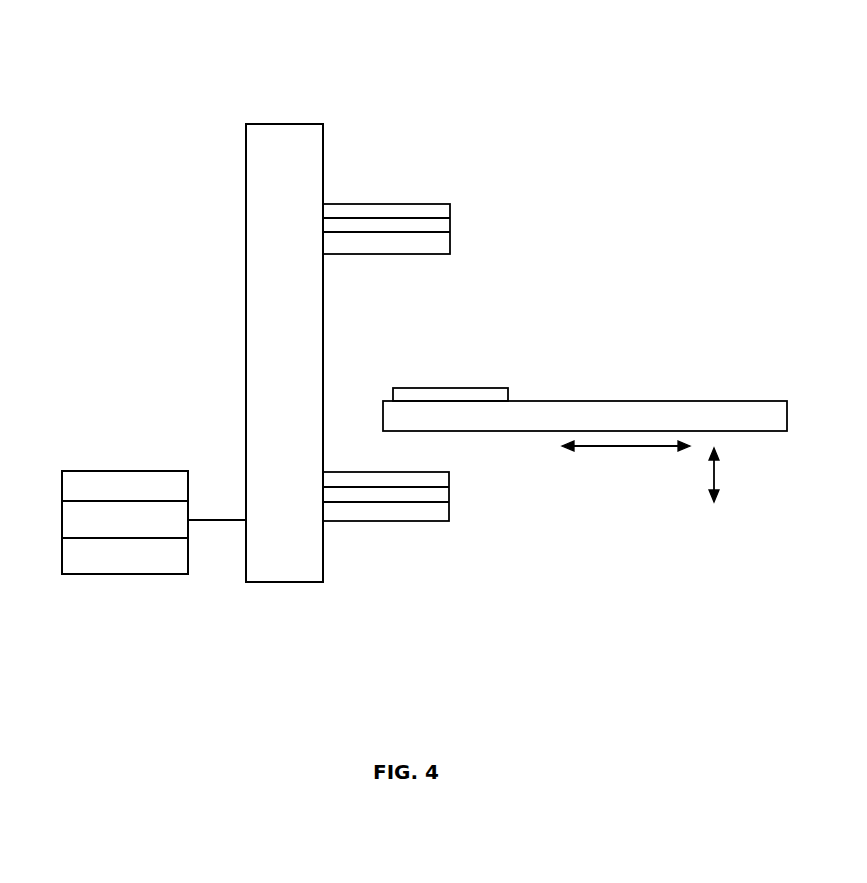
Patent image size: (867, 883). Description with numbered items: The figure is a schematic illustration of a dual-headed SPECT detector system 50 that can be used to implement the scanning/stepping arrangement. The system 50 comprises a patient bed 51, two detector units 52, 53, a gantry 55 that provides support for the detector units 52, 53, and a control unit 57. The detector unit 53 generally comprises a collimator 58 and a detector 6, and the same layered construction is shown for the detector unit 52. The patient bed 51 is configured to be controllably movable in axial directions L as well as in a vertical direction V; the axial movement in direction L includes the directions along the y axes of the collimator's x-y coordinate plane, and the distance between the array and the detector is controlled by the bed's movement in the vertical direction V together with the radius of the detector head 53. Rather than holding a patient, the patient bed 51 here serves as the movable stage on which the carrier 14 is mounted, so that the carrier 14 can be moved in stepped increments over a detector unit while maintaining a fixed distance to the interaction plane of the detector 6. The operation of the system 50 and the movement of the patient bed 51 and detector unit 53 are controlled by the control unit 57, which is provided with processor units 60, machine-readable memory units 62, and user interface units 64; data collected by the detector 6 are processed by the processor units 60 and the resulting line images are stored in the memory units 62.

The system 50 is at (417, 52).
The gantry 55 is at (255, 172).
The detector unit 53 is at (450, 188).
The detector unit 52 is at (458, 512).
The detector 6 is at (362, 203).
The collimator 58 is at (393, 242).
The control unit 57 is at (132, 457).
The user interface units 64 is at (93, 482).
The machine-readable memory units 62 is at (105, 518).
The processor units 60 is at (143, 562).
The patient bed 51 is at (670, 415).
The carrier 14 is at (457, 395).
The axial directions L is at (626, 446).
The vertical direction V is at (714, 472).